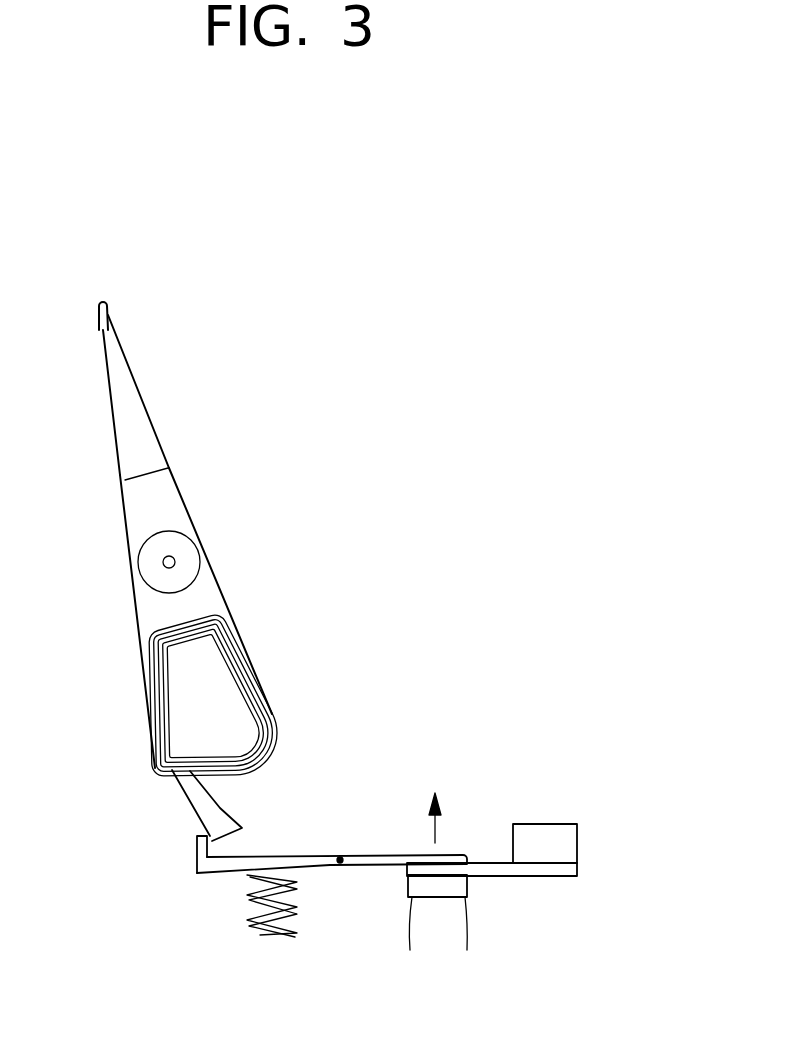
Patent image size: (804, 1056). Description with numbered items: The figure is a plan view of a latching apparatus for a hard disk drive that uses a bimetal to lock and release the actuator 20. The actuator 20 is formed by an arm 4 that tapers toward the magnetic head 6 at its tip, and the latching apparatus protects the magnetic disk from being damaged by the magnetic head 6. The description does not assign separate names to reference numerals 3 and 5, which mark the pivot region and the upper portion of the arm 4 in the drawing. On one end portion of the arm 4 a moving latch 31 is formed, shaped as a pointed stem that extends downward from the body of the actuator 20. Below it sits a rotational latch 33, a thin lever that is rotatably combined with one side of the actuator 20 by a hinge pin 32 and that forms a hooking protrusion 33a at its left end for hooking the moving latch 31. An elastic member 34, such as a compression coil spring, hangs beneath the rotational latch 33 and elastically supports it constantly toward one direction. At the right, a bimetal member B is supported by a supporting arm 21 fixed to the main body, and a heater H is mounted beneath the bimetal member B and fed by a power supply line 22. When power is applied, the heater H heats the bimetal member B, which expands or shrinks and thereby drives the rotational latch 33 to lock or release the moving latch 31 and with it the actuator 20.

The pivot shaft 3 is at (188, 549).
The arm 4 is at (143, 597).
The pointer arm 5 is at (123, 412).
The magnetic head 6 is at (100, 317).
The actuator 20 is at (222, 422).
The supporting arm 21 is at (568, 843).
The power supply line 22 is at (463, 923).
The moving latch 31 is at (220, 810).
The hinge pin 32 is at (336, 867).
The rotational latch 33 is at (457, 855).
The hooking protrusion 33a is at (207, 837).
The elastic member 34 is at (247, 903).
The bimetal member B is at (552, 870).
The heater H is at (408, 887).